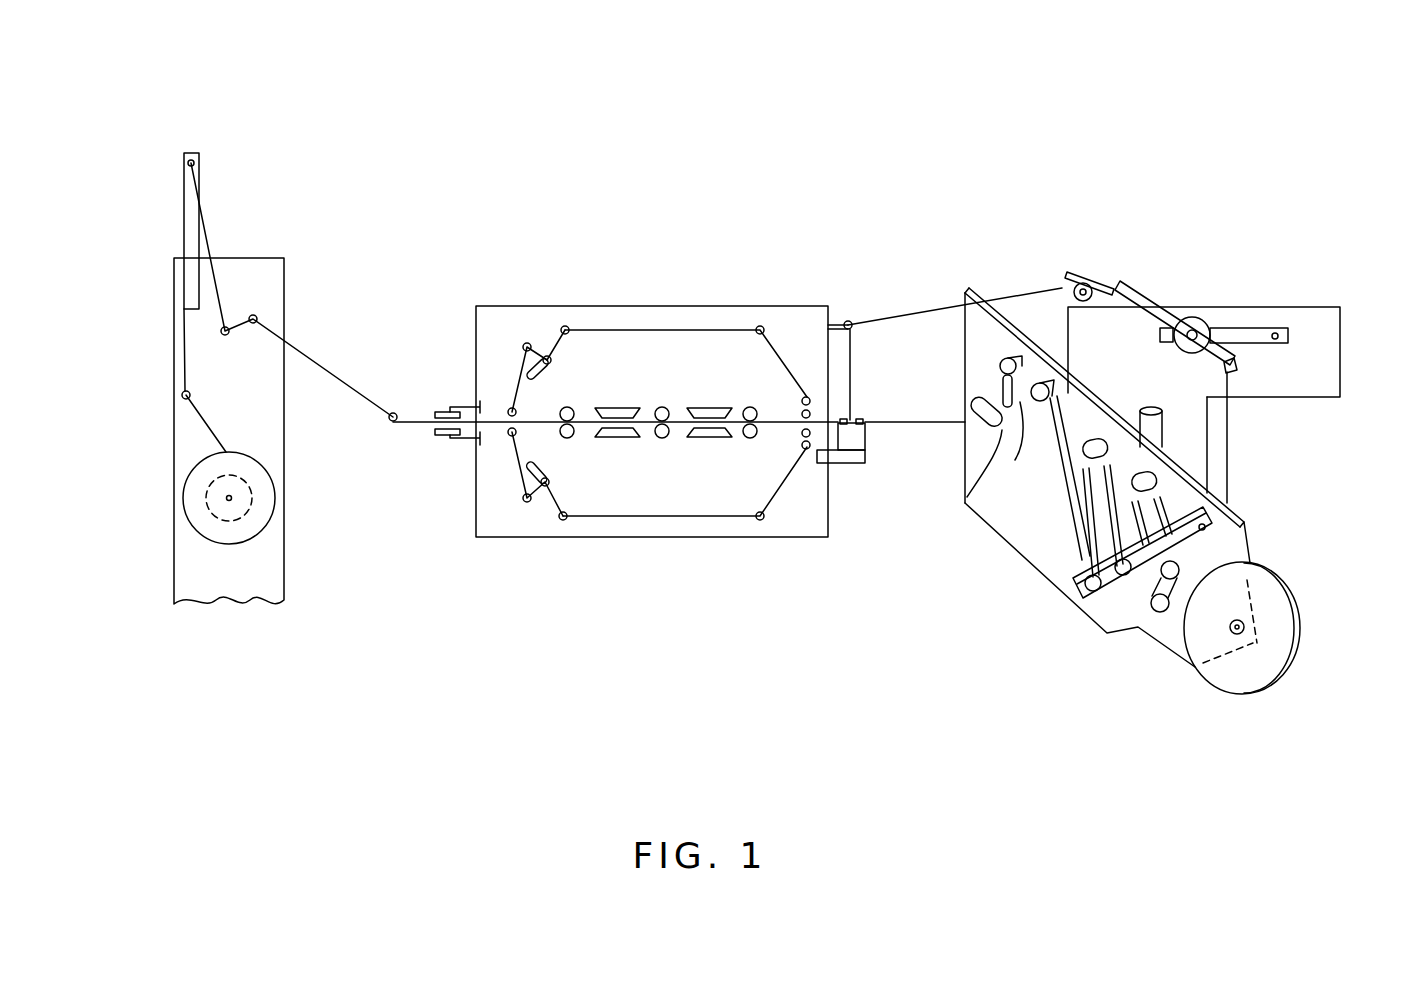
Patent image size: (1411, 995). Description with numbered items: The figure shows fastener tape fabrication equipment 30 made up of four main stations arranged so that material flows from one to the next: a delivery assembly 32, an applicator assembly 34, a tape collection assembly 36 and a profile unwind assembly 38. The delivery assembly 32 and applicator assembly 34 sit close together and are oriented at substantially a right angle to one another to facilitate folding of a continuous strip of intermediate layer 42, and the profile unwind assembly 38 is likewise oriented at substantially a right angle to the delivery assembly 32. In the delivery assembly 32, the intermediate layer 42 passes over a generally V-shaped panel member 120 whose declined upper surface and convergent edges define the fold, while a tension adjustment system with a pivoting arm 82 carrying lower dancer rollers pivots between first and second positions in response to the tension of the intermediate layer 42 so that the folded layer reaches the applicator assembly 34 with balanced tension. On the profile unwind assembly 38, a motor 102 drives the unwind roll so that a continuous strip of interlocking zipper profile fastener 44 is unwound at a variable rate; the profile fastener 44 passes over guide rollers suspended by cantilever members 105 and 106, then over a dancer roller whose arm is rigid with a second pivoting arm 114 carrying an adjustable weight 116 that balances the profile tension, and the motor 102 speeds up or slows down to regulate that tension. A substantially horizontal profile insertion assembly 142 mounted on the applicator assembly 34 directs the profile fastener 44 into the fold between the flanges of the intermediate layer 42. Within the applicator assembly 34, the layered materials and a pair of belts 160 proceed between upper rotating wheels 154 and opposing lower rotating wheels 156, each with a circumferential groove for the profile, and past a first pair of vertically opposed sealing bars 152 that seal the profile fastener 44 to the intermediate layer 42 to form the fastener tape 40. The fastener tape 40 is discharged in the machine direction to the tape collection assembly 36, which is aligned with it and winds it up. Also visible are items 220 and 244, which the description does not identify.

The fastener tape fabrication equipment 30 is at (872, 158).
The delivery assembly 32 is at (973, 652).
The applicator assembly 34 is at (733, 240).
The tape collection assembly 36 is at (208, 112).
The profile unwind assembly 38 is at (1296, 268).
The fastener tape 40 is at (333, 372).
The intermediate layer 42 is at (900, 428).
The profile fastener 44 is at (927, 308).
The pivoting arm 82 is at (1207, 493).
The motor 102 is at (1153, 407).
The cantilever member 105 is at (1153, 308).
The cantilever member 106 is at (1082, 280).
The second pivoting arm 114 is at (1253, 343).
The weight 116 is at (1203, 317).
The panel member 120 is at (1018, 437).
The profile insertion assembly 142 is at (843, 418).
The first pair of sealing bars 152 is at (615, 405).
The upper rotating wheels 154 is at (567, 407).
The lower rotating wheels 156 is at (567, 439).
The belts 160 is at (620, 330).
The guide brackets 220 is at (433, 430).
The unwind frame 244 is at (268, 426).